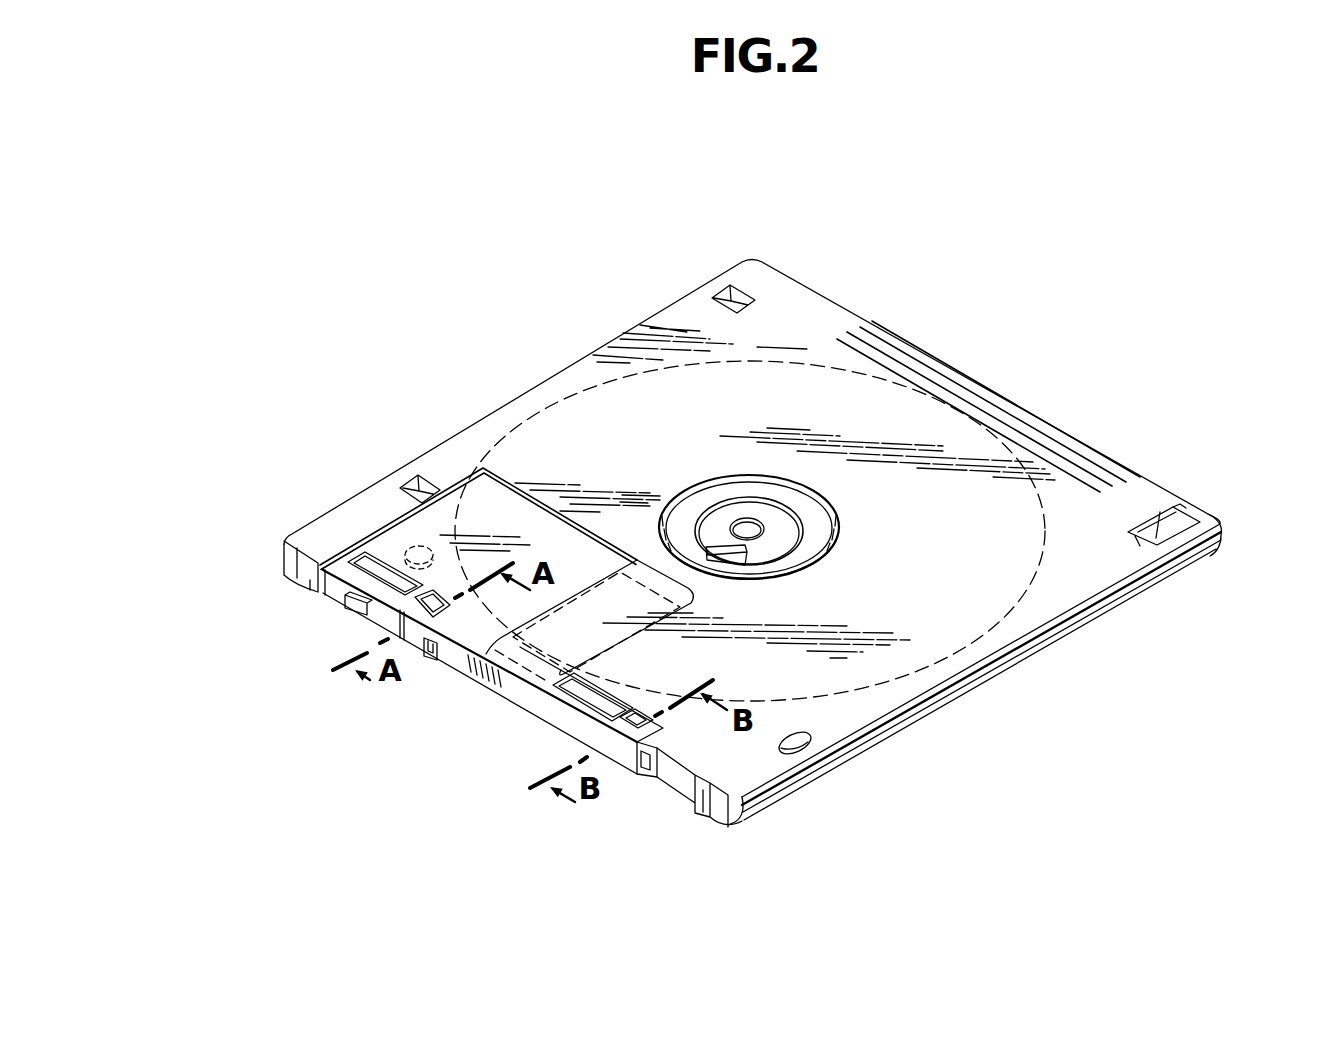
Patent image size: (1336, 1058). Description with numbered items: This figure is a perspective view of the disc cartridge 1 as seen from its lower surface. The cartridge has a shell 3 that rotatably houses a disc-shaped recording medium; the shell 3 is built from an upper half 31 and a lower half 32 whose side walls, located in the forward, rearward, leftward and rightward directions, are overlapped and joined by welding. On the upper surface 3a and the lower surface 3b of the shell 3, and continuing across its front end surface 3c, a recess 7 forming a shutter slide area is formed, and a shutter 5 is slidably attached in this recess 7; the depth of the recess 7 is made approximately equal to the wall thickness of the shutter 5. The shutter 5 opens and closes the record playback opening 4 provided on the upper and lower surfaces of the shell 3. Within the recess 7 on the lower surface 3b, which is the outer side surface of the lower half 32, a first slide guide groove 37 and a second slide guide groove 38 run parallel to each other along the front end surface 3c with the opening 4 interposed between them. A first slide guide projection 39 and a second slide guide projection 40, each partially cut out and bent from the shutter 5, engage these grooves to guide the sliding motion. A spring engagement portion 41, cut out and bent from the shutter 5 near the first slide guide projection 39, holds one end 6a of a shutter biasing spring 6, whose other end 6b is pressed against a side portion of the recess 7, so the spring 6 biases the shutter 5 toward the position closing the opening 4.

The disc cartridge 1 is at (632, 308).
The shell 3 is at (505, 401).
The upper surface 3a is at (1043, 648).
The lower surface 3b is at (978, 675).
The front end surface 3c is at (728, 820).
The opening 4 is at (577, 612).
The shutter 5 is at (495, 697).
The shutter biasing spring 6 is at (330, 545).
The one end of the shutter biasing spring 6a is at (420, 640).
The other end of the shutter biasing spring 6b is at (294, 554).
The recess (shutter slide area) 7 is at (588, 380).
The upper half 31 is at (1218, 523).
The lower half 32 is at (1213, 545).
The first slide guide groove 37 is at (377, 578).
The second slide guide groove 38 is at (587, 697).
The first slide guide projection 39 is at (377, 607).
The second slide guide projection 40 is at (633, 733).
The spring engagement portion 41 is at (425, 640).